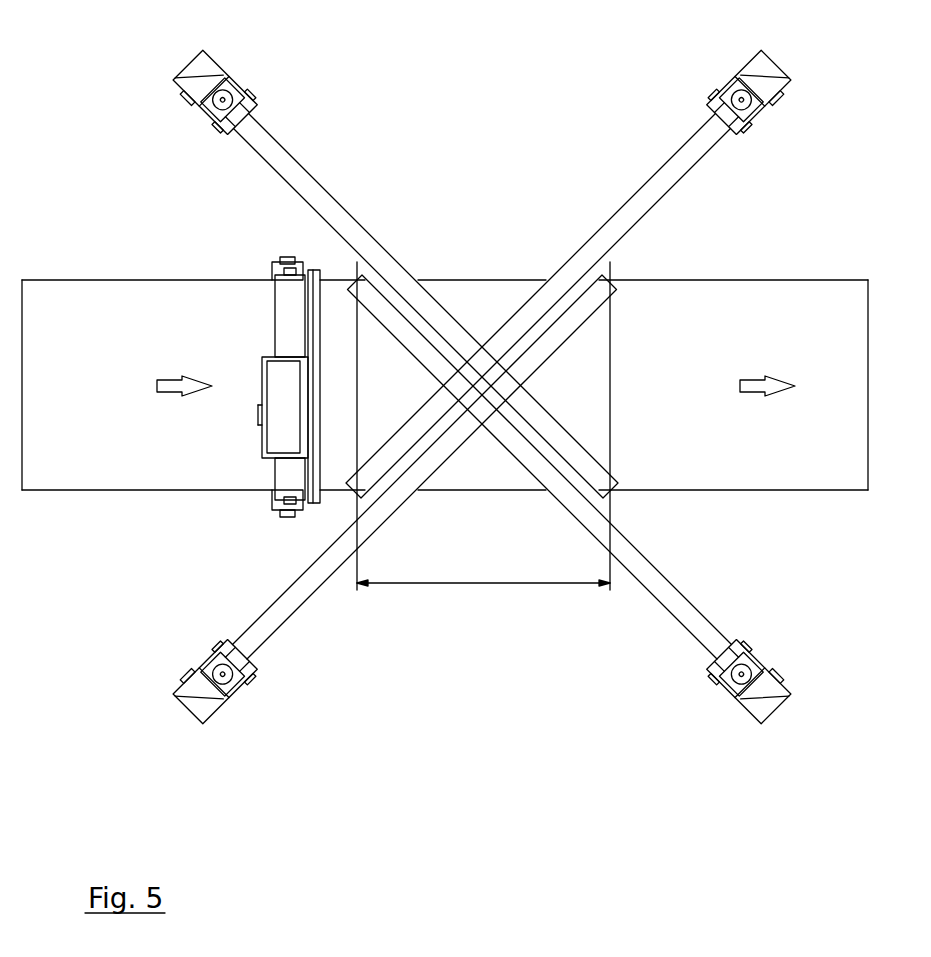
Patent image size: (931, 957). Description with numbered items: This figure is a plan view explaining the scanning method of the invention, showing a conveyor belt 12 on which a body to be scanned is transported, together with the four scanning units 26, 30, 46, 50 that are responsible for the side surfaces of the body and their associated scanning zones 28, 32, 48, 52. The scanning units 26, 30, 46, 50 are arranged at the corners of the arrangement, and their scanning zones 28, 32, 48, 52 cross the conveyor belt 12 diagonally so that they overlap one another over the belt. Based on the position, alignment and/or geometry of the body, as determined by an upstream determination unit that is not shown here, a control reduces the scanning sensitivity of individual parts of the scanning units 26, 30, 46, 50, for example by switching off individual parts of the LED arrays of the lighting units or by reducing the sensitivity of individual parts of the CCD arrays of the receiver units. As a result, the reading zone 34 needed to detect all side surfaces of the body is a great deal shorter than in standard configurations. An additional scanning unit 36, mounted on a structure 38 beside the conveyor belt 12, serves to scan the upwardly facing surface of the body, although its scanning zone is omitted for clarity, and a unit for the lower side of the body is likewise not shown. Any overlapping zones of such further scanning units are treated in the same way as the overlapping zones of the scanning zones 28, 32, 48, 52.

The conveyor belt 12 is at (776, 300).
The scanning unit 26 is at (225, 715).
The scanning zone 28 is at (292, 606).
The scanning unit 30 is at (743, 643).
The scanning zone 32 is at (640, 556).
The reading zone 34 is at (471, 583).
The scanning unit 36 is at (287, 317).
The cross bar 38 is at (330, 292).
The scanning unit 46 is at (241, 85).
The scanning zone 48 is at (298, 168).
The scanning unit 50 is at (723, 85).
The scanning zone 52 is at (666, 168).